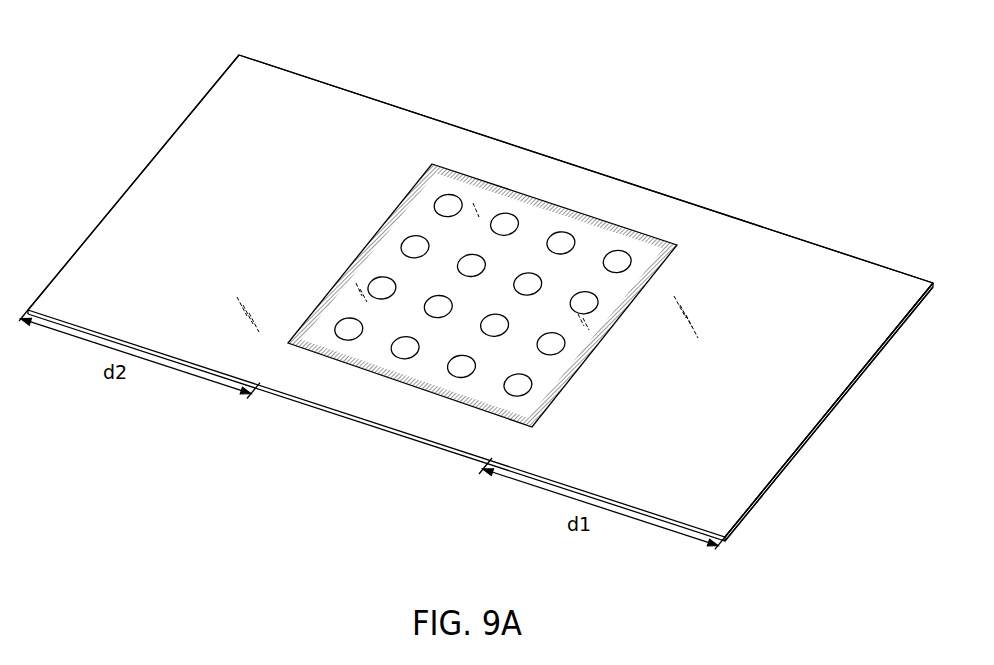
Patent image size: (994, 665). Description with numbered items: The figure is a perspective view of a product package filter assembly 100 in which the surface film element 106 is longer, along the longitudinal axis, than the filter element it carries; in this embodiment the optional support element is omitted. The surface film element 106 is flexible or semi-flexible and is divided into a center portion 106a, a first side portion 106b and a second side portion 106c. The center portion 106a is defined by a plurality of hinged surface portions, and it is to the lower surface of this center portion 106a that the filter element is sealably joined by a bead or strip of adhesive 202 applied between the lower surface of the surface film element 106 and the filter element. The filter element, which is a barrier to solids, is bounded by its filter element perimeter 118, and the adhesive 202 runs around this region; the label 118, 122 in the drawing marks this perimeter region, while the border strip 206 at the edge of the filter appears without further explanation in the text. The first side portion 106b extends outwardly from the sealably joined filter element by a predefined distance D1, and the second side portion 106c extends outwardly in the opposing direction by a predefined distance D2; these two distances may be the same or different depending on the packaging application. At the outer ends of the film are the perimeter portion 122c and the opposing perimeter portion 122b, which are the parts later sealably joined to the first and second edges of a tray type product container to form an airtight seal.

The product package filter assembly 100 is at (90, 30).
The surface film element 106 is at (585, 168).
The center portion 106a is at (632, 208).
The first side portion 106b is at (795, 258).
The second side portion 106c is at (328, 105).
The filter element perimeter 118 is at (385, 253).
The openings 122 is at (385, 253).
The opposing perimeter portion 122b is at (833, 408).
The perimeter portion 122c is at (137, 180).
The adhesive 202 is at (597, 343).
The border region 206 is at (648, 255).